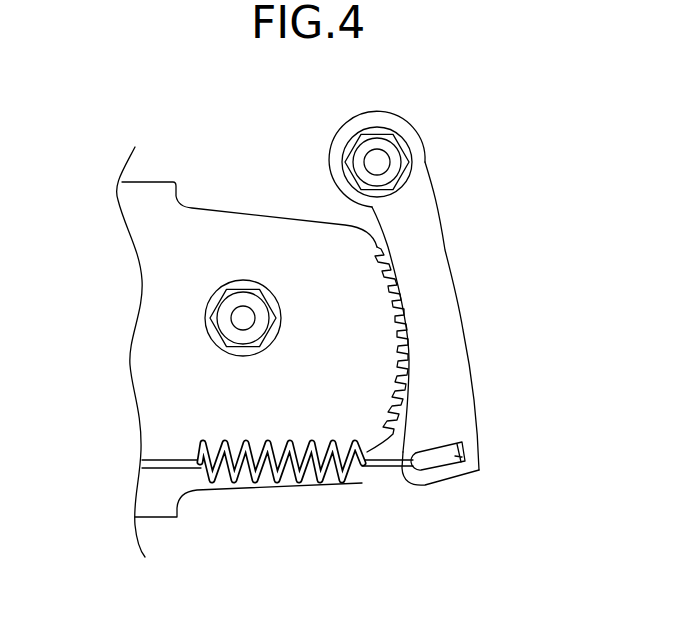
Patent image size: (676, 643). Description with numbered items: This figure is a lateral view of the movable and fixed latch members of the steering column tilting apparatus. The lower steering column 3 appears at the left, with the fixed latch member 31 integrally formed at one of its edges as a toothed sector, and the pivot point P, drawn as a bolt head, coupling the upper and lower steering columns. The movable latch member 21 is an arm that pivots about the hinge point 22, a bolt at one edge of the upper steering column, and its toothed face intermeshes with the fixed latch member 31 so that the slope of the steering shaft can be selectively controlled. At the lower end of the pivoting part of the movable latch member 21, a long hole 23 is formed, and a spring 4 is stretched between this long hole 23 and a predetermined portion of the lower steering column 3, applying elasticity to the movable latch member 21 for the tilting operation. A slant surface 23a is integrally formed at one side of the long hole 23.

The lower steering column 3 is at (158, 337).
The spring 4 is at (279, 490).
The movable latch member 21 is at (447, 306).
The hinge point 22 is at (378, 162).
The long hole 23 is at (435, 460).
The slant surface 23a is at (465, 462).
The fixed latch member 31 is at (387, 325).
The pivot point P is at (243, 318).